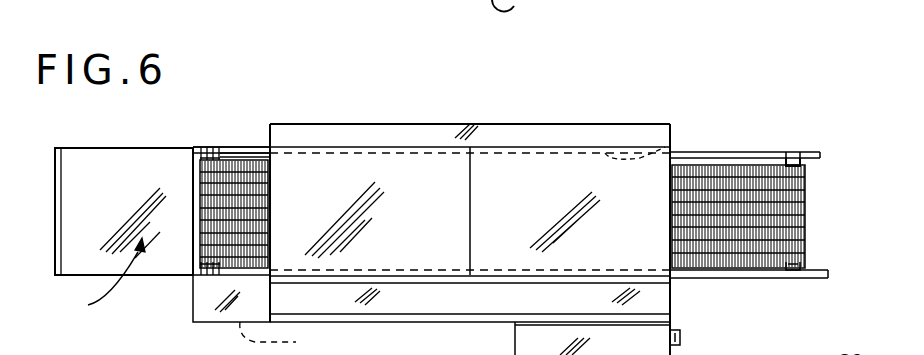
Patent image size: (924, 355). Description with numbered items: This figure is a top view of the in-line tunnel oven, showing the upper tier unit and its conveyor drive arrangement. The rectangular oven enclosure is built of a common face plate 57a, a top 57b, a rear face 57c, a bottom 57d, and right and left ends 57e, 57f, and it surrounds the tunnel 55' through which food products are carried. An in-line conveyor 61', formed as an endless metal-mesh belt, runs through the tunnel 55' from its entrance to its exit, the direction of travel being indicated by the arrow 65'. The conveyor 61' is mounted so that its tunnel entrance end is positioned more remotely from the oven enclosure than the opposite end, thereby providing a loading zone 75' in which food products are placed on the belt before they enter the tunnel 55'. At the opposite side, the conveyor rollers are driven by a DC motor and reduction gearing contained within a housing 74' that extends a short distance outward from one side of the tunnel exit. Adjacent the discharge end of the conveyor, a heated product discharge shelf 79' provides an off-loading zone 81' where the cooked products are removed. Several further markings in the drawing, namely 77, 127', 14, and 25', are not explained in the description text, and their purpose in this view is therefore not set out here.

The heated product discharge shelf 79' is at (124, 191).
The off-loading zone 81' is at (105, 279).
The left coil 77 is at (214, 174).
The coil terminal 127' is at (245, 126).
The housing 74' is at (205, 306).
The tube 14 is at (283, 338).
The face plate 57a is at (530, 124).
The top 57b is at (418, 170).
The rear face 57c is at (268, 135).
The tunnel 55' is at (670, 126).
The bottom 57d is at (505, 325).
The right end 57e is at (655, 325).
The left end 57f is at (673, 296).
The right coil top plate 25' is at (745, 148).
The loading zone 75' is at (775, 216).
The in-line conveyor 61' is at (822, 176).
The arrow 65' is at (749, 267).